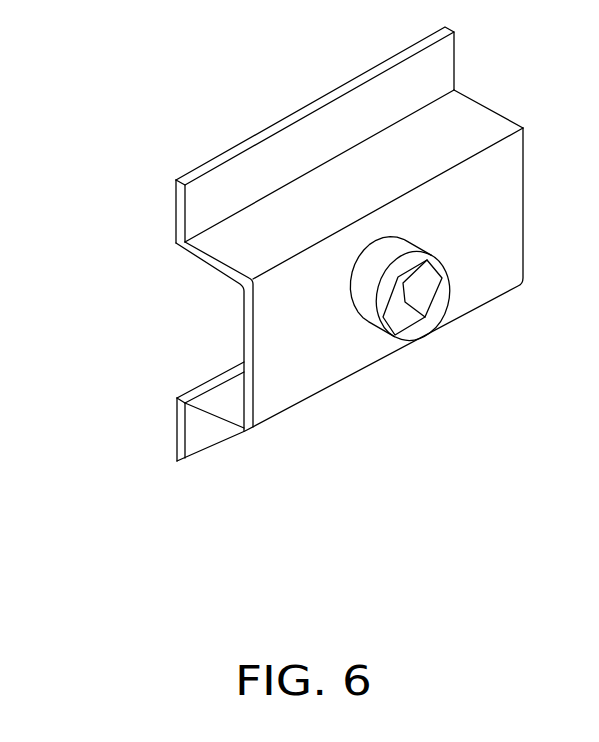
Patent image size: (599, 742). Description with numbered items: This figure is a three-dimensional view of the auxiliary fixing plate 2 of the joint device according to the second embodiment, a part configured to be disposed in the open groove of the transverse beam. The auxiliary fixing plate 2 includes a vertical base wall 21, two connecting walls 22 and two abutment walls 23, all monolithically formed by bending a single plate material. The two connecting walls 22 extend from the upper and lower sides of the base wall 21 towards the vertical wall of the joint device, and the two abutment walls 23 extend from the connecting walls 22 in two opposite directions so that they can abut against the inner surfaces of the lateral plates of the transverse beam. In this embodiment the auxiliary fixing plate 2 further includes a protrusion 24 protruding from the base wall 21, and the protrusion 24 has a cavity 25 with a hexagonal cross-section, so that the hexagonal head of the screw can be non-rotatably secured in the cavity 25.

The auxiliary fixing plate 2 is at (297, 286).
The base wall 21 is at (322, 372).
The connecting walls 22 is at (267, 245).
The abutment walls 23 is at (195, 210).
The protrusion 24 is at (401, 340).
The cavity 25 is at (402, 318).